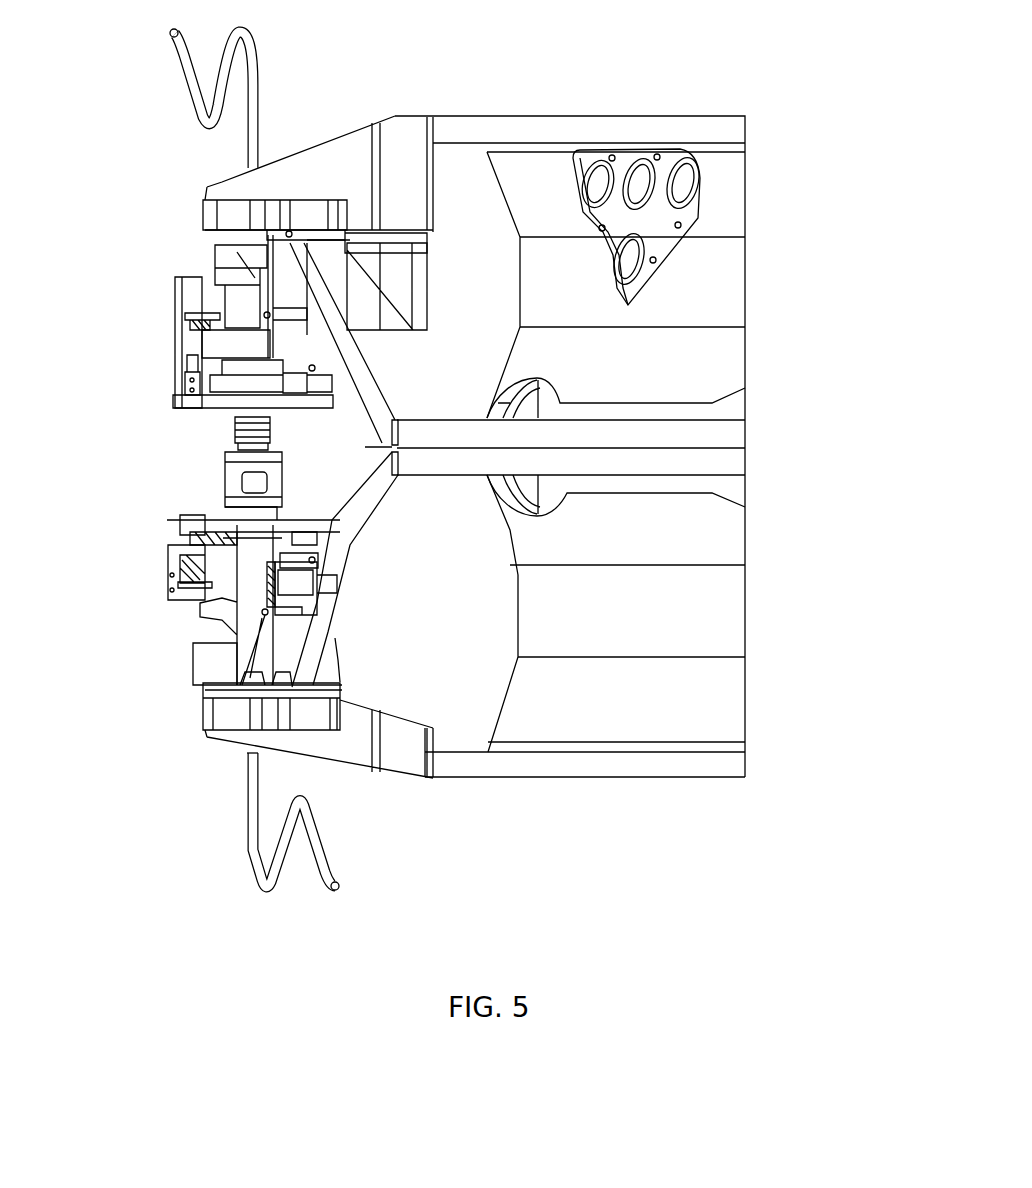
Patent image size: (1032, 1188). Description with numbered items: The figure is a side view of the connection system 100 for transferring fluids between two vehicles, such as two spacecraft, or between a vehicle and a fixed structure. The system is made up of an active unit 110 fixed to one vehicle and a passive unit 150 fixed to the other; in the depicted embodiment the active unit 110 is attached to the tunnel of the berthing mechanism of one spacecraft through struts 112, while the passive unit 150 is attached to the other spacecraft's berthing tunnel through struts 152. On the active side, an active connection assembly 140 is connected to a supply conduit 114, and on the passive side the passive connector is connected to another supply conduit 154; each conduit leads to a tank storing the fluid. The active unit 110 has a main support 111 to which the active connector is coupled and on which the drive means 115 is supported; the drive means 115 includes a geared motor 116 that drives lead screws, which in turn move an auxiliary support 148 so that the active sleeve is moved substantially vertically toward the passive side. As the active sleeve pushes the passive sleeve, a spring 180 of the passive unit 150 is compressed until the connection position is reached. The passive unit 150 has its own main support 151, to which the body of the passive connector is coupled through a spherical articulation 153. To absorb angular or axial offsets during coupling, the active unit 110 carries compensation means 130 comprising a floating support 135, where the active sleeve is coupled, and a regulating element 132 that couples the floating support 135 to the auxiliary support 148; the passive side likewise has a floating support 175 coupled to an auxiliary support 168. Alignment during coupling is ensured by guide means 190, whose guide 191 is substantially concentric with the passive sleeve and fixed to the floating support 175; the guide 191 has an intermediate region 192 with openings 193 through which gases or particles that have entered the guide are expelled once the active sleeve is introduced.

The connection system 100 is at (754, 396).
The active unit 110 is at (748, 239).
The passive unit 150 is at (754, 636).
The geared motor 116 is at (368, 355).
The struts 112 is at (317, 297).
The main support 111 is at (290, 231).
The supply conduit 114 is at (196, 96).
The supply conduit 154 is at (253, 803).
The drive means 115 is at (240, 297).
The compensation means 130 is at (203, 316).
The regulating element 132 is at (197, 330).
The floating support 135 is at (185, 383).
The auxiliary support 148 is at (183, 403).
The active connection assembly 140 is at (240, 428).
The intermediate region 192 is at (233, 473).
The openings 193 is at (243, 482).
The guide means 190 is at (230, 490).
The guide 191 is at (237, 512).
The spring 180 is at (213, 610).
The spherical articulation 153 is at (212, 662).
The main support 151 is at (225, 710).
The struts 152 is at (343, 567).
The floating support 175 is at (297, 519).
The auxiliary support 168 is at (283, 540).